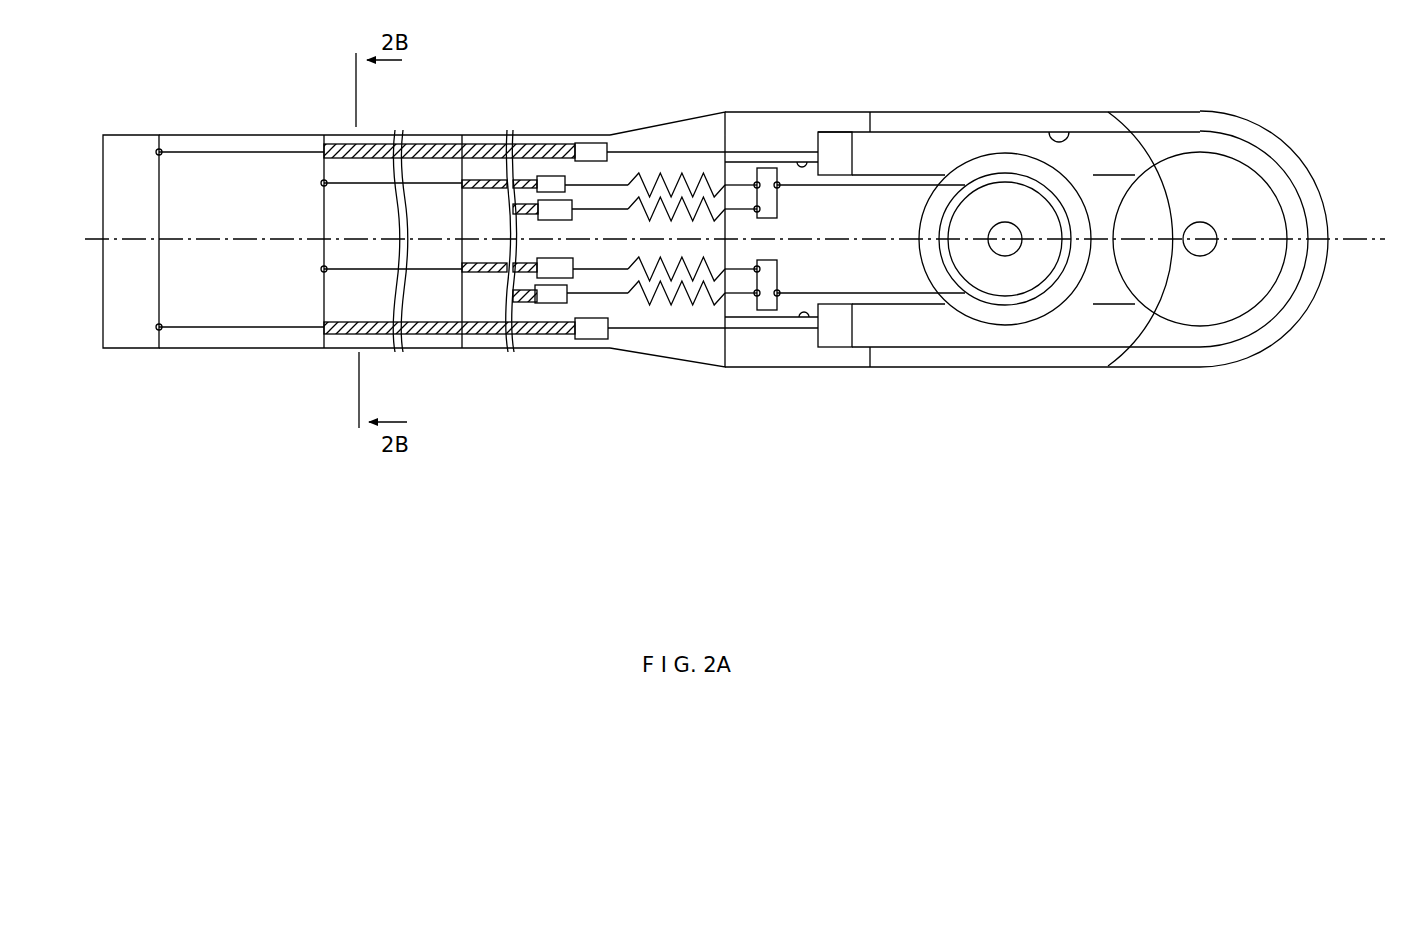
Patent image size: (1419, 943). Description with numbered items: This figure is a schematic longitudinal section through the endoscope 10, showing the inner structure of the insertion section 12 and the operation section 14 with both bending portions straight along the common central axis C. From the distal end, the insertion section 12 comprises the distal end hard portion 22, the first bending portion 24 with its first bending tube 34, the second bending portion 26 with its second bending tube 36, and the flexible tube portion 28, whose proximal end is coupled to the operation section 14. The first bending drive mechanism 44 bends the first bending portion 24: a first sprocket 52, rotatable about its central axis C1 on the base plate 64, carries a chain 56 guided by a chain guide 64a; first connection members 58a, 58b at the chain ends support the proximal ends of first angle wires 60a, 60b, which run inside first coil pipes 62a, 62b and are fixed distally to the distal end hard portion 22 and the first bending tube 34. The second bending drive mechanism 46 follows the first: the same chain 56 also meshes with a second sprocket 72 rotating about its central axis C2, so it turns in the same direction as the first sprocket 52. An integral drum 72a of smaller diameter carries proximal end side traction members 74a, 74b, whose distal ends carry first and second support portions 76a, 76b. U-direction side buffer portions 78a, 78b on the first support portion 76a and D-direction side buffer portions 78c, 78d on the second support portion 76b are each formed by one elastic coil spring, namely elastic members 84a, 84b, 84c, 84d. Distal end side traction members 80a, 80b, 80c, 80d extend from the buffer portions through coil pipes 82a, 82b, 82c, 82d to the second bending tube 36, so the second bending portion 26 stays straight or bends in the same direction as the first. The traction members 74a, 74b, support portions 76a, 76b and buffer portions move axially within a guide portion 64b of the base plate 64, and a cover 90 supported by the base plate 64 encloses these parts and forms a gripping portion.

The endoscope 10 is at (775, 480).
The insertion section 12 is at (309, 434).
The operation section 14 is at (1073, 427).
The distal end hard portion 22 is at (103, 166).
The first bending portion 24 is at (280, 135).
The second bending portion 26 is at (442, 135).
The flexible tube portion 28 is at (582, 143).
The first bending tube 34 is at (280, 348).
The second bending tube 36 is at (332, 348).
The first bending drive mechanism 44 is at (894, 110).
The second bending drive mechanism 46 is at (713, 146).
The first sprocket 52 is at (1205, 152).
The chain 56 is at (1107, 147).
The first connection member 58a is at (838, 142).
The first connection member 58b is at (838, 340).
The first angle wire 60a is at (228, 152).
The first angle wire 60b is at (230, 327).
The first coil pipe 62a is at (332, 144).
The first coil pipe 62b is at (492, 334).
The base plate 64 is at (822, 113).
The chain guide 64a is at (1050, 132).
The guide portion 64b is at (803, 160).
The second sprocket 72 is at (1005, 153).
The drum 72a is at (1032, 262).
The proximal end side traction member 74a is at (918, 180).
The proximal end side traction member 74b is at (910, 306).
The first support portion 76a is at (772, 168).
The second support portion 76b is at (774, 310).
The U-direction side buffer portion 78a is at (666, 172).
The U-direction side buffer portion 78b is at (662, 198).
The D-direction side buffer portion 78c is at (690, 282).
The D-direction side buffer portion 78d is at (672, 306).
The distal end side traction member 80a is at (423, 183).
The distal end side traction member 80b is at (582, 207).
The distal end side traction member 80c is at (422, 270).
The distal end side traction member 80d is at (569, 297).
The coil pipe 82a is at (528, 204).
The coil pipe 82b is at (474, 180).
The coil pipe 82c is at (483, 273).
The coil pipe 82d is at (527, 303).
The elastic member 84a is at (740, 182).
The elastic member 84b is at (742, 206).
The elastic member 84c is at (742, 272).
The elastic member 84d is at (740, 296).
The cover 90 is at (1262, 97).
The central axis C is at (1345, 239).
The central axis of first sprocket C1 is at (1200, 250).
The central axis of second sprocket C2 is at (1005, 244).